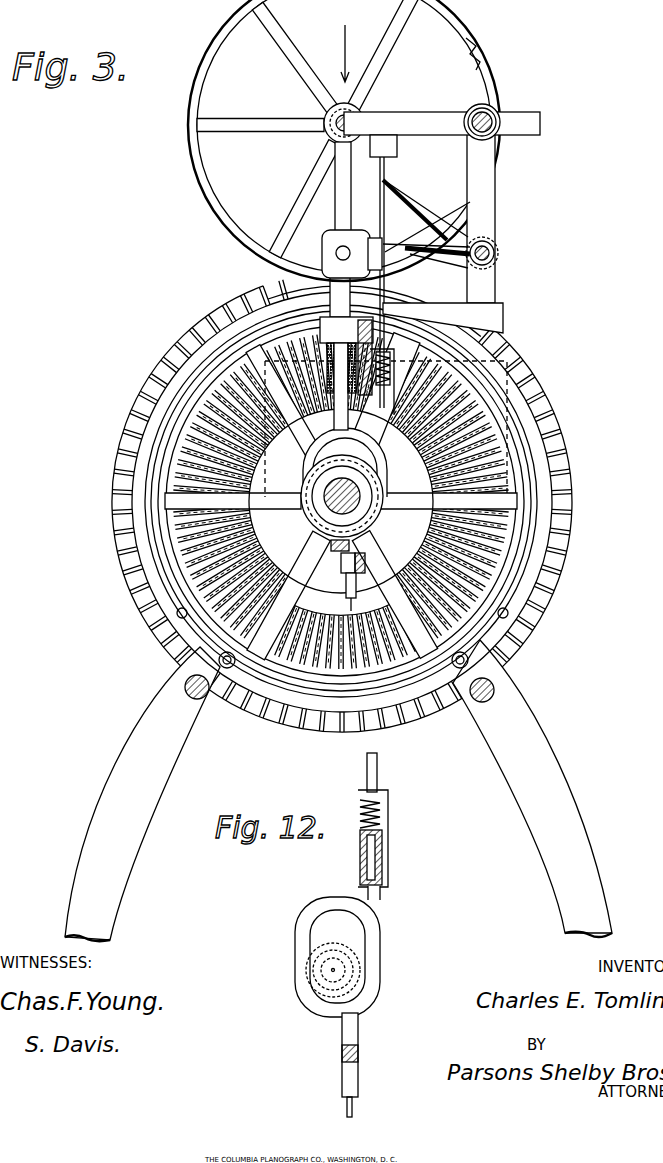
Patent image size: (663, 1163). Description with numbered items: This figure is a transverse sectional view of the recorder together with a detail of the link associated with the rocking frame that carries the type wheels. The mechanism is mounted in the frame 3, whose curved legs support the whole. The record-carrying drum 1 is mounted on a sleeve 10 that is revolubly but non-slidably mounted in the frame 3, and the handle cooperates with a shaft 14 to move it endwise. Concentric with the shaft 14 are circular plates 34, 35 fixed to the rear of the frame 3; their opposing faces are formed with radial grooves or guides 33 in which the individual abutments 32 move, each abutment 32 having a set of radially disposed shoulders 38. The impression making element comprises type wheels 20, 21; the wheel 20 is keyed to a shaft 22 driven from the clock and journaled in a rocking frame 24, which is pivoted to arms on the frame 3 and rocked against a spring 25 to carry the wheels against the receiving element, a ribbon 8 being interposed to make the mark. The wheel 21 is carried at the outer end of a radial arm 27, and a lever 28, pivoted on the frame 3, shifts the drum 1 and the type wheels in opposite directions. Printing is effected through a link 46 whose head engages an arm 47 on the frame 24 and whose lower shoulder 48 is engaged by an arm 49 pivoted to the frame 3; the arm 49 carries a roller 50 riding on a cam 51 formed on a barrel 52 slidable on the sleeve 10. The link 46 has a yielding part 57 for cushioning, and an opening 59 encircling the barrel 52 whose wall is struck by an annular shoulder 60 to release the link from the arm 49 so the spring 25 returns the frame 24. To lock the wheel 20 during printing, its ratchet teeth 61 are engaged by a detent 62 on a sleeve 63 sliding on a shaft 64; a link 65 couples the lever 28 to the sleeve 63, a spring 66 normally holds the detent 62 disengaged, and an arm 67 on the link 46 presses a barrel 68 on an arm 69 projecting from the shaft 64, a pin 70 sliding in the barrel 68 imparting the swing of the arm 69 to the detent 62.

In FIG. 3, the drum 1 is at (548, 509).
In FIG. 3, the frame 3 is at (576, 793).
In FIG. 3, the ribbon 8 is at (330, 362).
In FIG. 3, the sleeve 10 is at (327, 501).
In FIG. 12, the sleeve 10 is at (326, 986).
In FIG. 3, the shaft 14 is at (370, 506).
In FIG. 12, the shaft 14 is at (331, 983).
In FIG. 3, the type wheel 20 is at (494, 56).
In FIG. 3, the type wheel 21 is at (322, 254).
In FIG. 3, the shaft 22 is at (336, 126).
In FIG. 3, the frame 24 is at (420, 112).
In FIG. 3, the spring 25 is at (500, 116).
In FIG. 3, the radial arm 27 is at (335, 182).
In FIG. 3, the lever 28 is at (334, 379).
In FIG. 3, the individual abutments 32 is at (525, 438).
In FIG. 3, the radial grooves or guides 33 is at (535, 452).
In FIG. 3, the rear circular plate 34 is at (552, 588).
In FIG. 3, the circular plate 35 is at (540, 608).
In FIG. 3, the radially disposed shoulders 38 is at (322, 636).
In FIG. 3, the link 46 is at (503, 319).
In FIG. 12, the link 46 is at (395, 886).
In FIG. 3, the arm 47 is at (400, 152).
In FIG. 12, the shoulder 48 is at (358, 1057).
In FIG. 3, the arm 49 is at (345, 573).
In FIG. 3, the roller 50 is at (338, 553).
In FIG. 3, the cam 51 is at (306, 484).
In FIG. 3, the barrel 52 is at (380, 479).
In FIG. 12, the barrel 52 is at (313, 976).
In FIG. 3, the yielding part 57 is at (390, 366).
In FIG. 12, the yielding part 57 is at (362, 814).
In FIG. 12, the opening 59 is at (318, 929).
In FIG. 12, the annular shoulder 60 is at (338, 943).
In FIG. 3, the ratchet teeth 61 is at (474, 49).
In FIG. 3, the detent 62 is at (336, 248).
In FIG. 3, the sleeve 63 is at (495, 252).
In FIG. 3, the shaft 64 is at (496, 259).
In FIG. 3, the link 65 is at (431, 216).
In FIG. 3, the spring 66 is at (441, 260).
In FIG. 3, the arm 67 is at (416, 212).
In FIG. 3, the barrel 68 is at (431, 270).
In FIG. 3, the arm 69 is at (446, 230).
In FIG. 3, the pin 70 is at (384, 272).